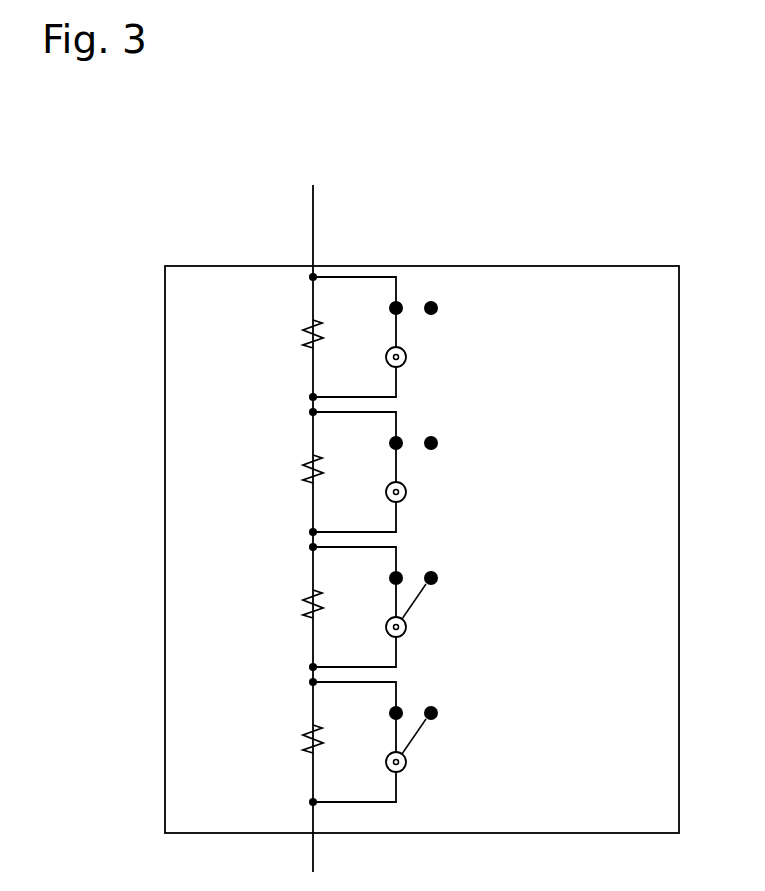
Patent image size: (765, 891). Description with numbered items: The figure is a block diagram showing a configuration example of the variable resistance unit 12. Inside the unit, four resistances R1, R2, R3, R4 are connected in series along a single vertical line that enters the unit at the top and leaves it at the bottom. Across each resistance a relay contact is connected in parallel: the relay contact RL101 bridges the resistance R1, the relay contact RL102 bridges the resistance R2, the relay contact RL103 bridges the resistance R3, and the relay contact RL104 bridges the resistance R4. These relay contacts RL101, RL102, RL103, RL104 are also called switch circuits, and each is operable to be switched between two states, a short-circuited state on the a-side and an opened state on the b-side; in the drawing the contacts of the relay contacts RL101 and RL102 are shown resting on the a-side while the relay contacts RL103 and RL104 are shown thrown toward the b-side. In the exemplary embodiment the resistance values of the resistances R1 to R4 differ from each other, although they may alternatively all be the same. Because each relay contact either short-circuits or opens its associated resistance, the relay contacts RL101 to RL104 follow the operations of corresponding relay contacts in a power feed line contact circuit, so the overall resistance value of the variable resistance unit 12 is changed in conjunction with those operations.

The variable resistance unit 12 is at (632, 266).
The resistance R1 is at (293, 333).
The resistance R2 is at (293, 468).
The resistance R3 is at (293, 603).
The resistance R4 is at (293, 738).
The relay contact RL101 is at (406, 357).
The relay contact RL102 is at (406, 492).
The relay contact RL103 is at (406, 627).
The relay contact RL104 is at (406, 762).